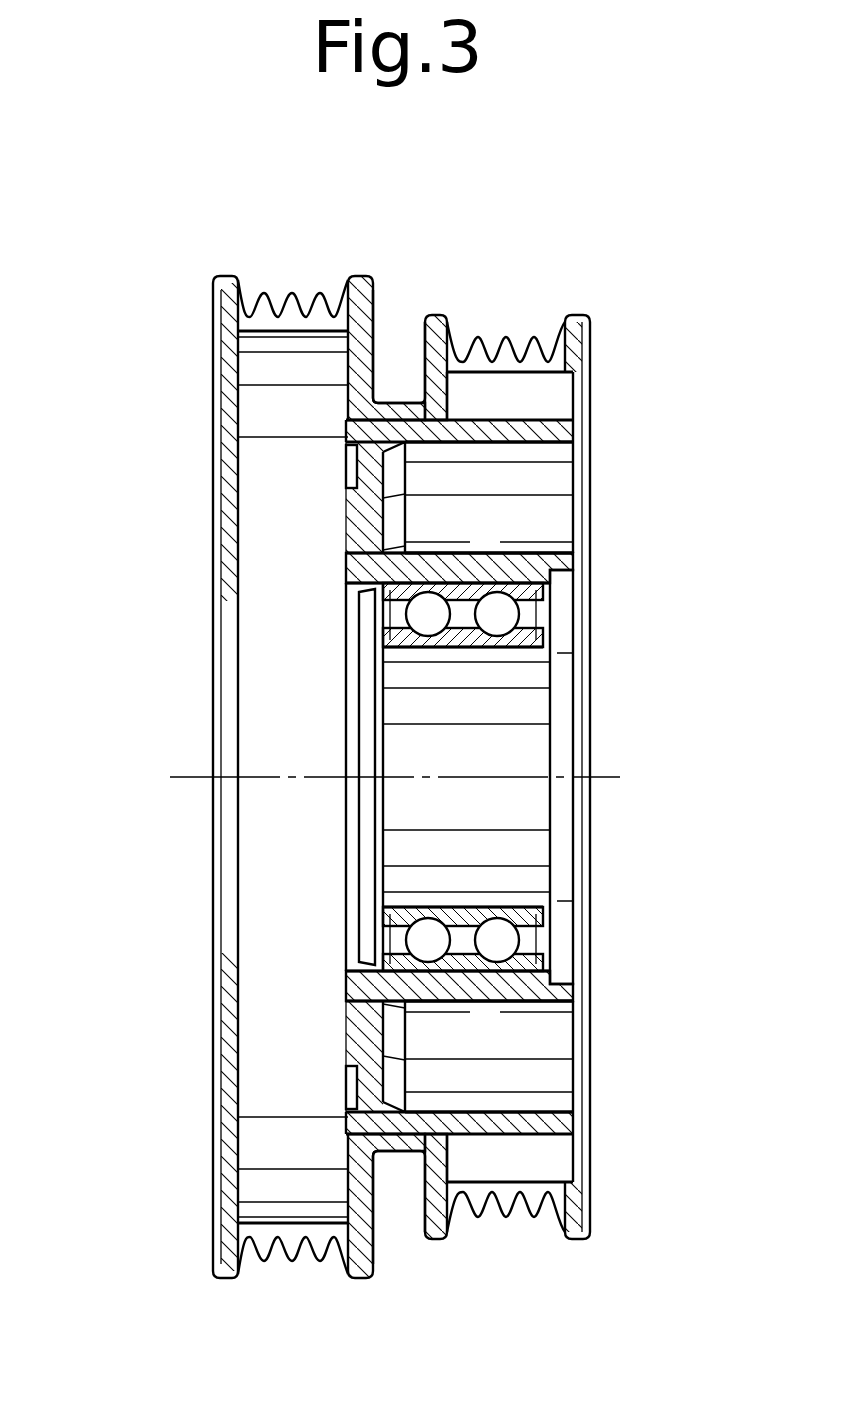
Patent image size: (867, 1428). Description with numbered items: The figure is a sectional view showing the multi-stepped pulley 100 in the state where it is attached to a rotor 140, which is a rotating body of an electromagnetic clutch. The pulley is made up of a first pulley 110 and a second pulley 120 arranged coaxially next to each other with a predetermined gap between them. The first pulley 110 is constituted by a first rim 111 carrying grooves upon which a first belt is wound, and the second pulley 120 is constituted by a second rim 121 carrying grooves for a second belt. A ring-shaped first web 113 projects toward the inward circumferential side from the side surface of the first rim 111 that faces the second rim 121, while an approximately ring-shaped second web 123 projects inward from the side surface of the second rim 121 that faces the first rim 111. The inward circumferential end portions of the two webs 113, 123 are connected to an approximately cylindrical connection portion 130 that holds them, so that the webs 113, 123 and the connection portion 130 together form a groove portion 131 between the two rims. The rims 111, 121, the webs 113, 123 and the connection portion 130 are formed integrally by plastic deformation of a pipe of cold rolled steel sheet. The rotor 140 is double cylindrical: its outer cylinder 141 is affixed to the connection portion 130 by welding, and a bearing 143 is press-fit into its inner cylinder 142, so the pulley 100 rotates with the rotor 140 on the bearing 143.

The multi-stepped pulley 100 is at (516, 238).
The first pulley 110 is at (203, 383).
The first rim 111 is at (213, 283).
The first web 113 is at (385, 395).
The second pulley 120 is at (602, 433).
The second rim 121 is at (590, 322).
The second web 123 is at (424, 388).
The connection portion 130 is at (393, 400).
The groove portion 131 is at (401, 1203).
The rotor 140 is at (538, 410).
The outer cylinder 141 is at (480, 418).
The inner cylinder 142 is at (513, 551).
The bearing 143 is at (510, 647).